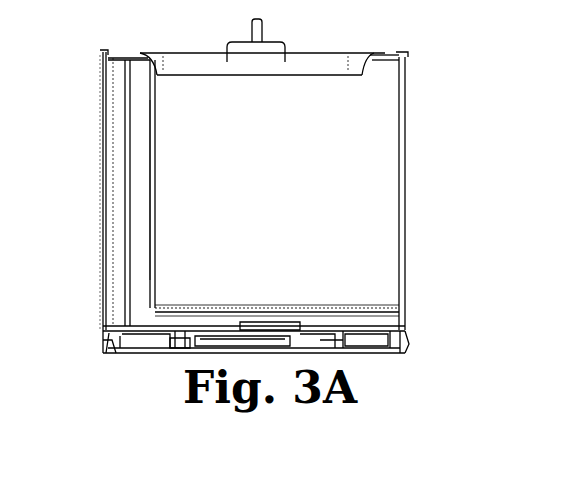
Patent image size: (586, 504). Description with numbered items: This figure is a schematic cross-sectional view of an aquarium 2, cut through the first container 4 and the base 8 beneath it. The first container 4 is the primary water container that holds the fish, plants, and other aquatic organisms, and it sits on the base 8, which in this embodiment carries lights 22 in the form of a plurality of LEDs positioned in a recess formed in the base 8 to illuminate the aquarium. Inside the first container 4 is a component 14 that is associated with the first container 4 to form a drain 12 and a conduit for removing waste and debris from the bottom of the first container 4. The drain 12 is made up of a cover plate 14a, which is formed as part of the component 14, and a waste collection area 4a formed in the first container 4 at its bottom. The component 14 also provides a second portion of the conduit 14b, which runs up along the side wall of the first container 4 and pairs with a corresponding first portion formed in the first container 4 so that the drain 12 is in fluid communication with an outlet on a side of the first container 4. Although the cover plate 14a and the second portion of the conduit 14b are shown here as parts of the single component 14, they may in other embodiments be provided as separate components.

The aquarium 2 is at (78, 52).
The first container 4 is at (408, 152).
The waste collection area 4a is at (247, 342).
The base 8 is at (400, 337).
The drain 12 is at (270, 318).
The component 14 is at (122, 134).
The cover plate 14a is at (242, 330).
The second portion of the conduit 14b is at (138, 187).
The lights 22 is at (178, 353).